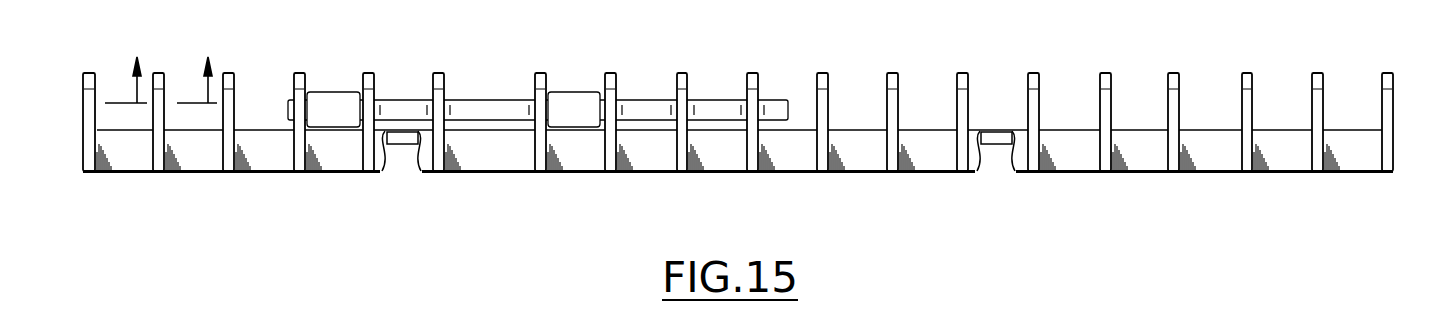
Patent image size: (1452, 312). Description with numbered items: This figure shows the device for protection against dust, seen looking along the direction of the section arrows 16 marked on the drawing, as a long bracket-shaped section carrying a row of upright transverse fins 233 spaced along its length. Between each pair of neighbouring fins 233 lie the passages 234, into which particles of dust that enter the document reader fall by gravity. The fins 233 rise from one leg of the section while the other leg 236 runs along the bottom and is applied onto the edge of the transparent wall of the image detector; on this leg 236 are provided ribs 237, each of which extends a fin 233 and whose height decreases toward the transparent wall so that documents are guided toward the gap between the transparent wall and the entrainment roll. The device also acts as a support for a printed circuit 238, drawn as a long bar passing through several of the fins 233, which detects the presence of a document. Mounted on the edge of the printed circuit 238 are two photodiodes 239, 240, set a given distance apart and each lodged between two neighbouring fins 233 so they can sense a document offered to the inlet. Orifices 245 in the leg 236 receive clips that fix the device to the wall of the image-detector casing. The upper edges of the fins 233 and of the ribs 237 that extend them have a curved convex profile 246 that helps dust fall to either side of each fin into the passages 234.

The section line arrows 16 is at (162, 64).
The transverse fins 233 is at (297, 75).
The passages 234 is at (291, 95).
The leg 236 is at (577, 155).
The ribs 237 is at (533, 168).
The printed circuit 238 is at (467, 112).
The photodiode 239 is at (328, 110).
The photodiode 240 is at (565, 110).
The orifices 245 is at (405, 152).
The curved convex profile 246 is at (306, 298).